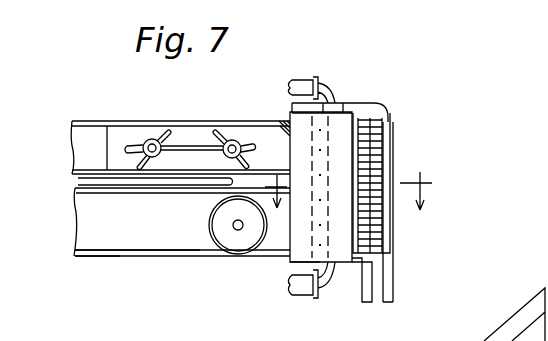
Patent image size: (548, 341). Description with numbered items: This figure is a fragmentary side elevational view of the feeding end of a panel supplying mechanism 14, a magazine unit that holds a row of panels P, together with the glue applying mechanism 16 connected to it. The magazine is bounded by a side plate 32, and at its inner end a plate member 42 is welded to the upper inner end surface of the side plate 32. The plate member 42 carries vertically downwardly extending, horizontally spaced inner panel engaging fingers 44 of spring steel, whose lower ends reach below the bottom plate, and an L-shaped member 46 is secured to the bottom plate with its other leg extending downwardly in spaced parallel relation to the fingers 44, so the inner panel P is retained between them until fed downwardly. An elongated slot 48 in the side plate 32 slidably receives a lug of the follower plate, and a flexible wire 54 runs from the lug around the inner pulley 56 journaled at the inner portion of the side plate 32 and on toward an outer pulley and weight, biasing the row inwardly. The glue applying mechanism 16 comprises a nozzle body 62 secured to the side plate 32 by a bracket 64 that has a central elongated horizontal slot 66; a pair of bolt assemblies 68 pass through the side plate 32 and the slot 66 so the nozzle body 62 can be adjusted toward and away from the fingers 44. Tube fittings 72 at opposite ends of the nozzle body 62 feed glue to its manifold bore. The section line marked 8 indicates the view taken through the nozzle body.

The panel supplying mechanism 14 is at (195, 260).
The glue applying mechanism 16 is at (357, 103).
The side plate 32 is at (116, 246).
The plate member 42 is at (290, 120).
The inner panel engaging fingers 44 is at (390, 224).
The L-shaped member 46 is at (365, 292).
The elongated slot 48 is at (118, 180).
The wire 54 is at (90, 258).
The inner pulley 56 is at (226, 226).
The nozzle body 62 is at (290, 262).
The bracket 64 is at (183, 125).
The elongated slot 66 is at (234, 136).
The bolt assemblies 68 is at (146, 138).
The tube fittings 72 is at (334, 90).
The section direction arrows 8 is at (348, 176).
The panel P is at (378, 115).